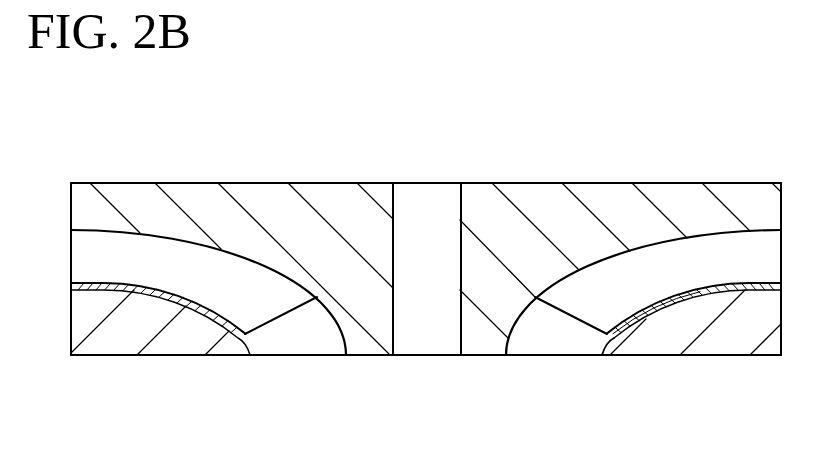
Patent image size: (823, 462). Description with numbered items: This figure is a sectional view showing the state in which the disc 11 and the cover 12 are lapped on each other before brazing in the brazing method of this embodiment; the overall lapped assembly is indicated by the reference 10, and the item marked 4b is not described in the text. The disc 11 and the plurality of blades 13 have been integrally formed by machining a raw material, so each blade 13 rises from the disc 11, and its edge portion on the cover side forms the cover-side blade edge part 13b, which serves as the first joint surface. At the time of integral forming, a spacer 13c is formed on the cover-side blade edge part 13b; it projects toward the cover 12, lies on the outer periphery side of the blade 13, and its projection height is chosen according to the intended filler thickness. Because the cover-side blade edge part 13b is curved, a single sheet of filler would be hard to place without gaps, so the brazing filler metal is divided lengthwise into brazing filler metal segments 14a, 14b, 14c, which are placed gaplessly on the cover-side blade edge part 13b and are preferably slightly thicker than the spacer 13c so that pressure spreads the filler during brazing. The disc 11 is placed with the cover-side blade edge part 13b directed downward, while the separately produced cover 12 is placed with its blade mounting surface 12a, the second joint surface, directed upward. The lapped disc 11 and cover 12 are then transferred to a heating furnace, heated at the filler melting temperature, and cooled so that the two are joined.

The display device 10 is at (426, 238).
The disc 11 is at (495, 183).
The cover 12 is at (648, 268).
The blade mounting surface 12a is at (660, 283).
The blade 13 is at (285, 320).
The cover-side blade edge part 13b is at (675, 305).
The spacer 13c is at (92, 283).
The brazing filler metal segment 14a is at (139, 283).
The brazing filler metal segment 14b is at (187, 285).
The brazing filler metal segment 14c is at (233, 317).
The lower substrate 4b is at (672, 283).